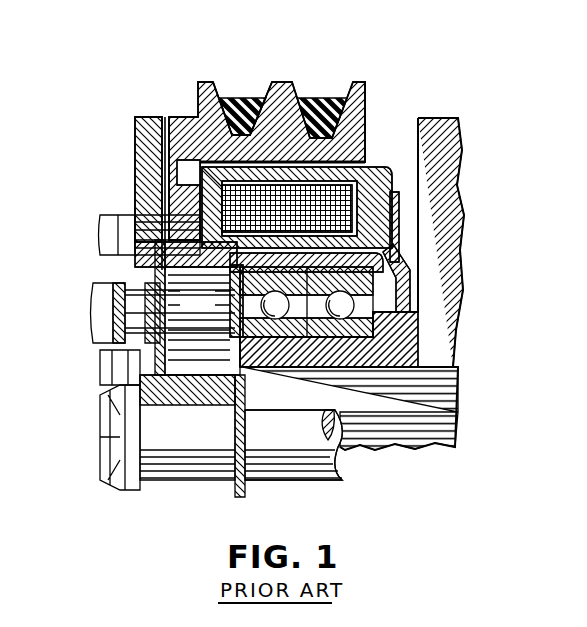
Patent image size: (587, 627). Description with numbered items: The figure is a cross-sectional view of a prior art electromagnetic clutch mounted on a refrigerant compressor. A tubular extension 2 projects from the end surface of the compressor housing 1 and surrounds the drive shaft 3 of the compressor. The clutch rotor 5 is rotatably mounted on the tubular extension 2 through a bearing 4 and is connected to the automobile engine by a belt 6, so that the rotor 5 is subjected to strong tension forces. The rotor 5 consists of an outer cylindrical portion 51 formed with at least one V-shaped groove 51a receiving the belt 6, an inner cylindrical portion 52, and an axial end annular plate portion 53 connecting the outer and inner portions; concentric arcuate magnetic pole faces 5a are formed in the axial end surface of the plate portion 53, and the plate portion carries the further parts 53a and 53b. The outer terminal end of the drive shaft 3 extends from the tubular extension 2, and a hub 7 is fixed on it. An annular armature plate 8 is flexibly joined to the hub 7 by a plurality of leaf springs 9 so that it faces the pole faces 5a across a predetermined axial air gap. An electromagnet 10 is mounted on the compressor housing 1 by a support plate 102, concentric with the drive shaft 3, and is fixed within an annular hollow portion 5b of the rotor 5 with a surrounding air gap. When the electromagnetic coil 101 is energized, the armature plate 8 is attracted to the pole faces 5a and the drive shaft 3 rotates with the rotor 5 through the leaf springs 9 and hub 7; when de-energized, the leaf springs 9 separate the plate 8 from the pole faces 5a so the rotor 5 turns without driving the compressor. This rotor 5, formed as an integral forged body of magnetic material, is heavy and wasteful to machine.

The compressor housing 1 is at (440, 118).
The tubular extension 2 is at (338, 357).
The drive shaft 3 is at (327, 467).
The bearing 4 is at (390, 330).
The rotor 5 is at (360, 82).
The magnetic pole faces 5a is at (137, 205).
The annular hollow portion 5b is at (177, 173).
The belt 6 is at (253, 105).
The hub 7 is at (182, 398).
The armature plate 8 is at (157, 127).
The leaf springs 9 is at (113, 355).
The electromagnet 10 is at (398, 175).
The electromagnetic coil 101 is at (352, 195).
The support plate 102 is at (396, 245).
The outer cylindrical portion 51 is at (365, 115).
The V-shaped groove 51a is at (235, 98).
The inner cylindrical portion 52 is at (223, 287).
The axial end annular plate portion 53 is at (168, 195).
The end plate outer surface 53a is at (175, 167).
The end plate inner portion 53b is at (173, 237).